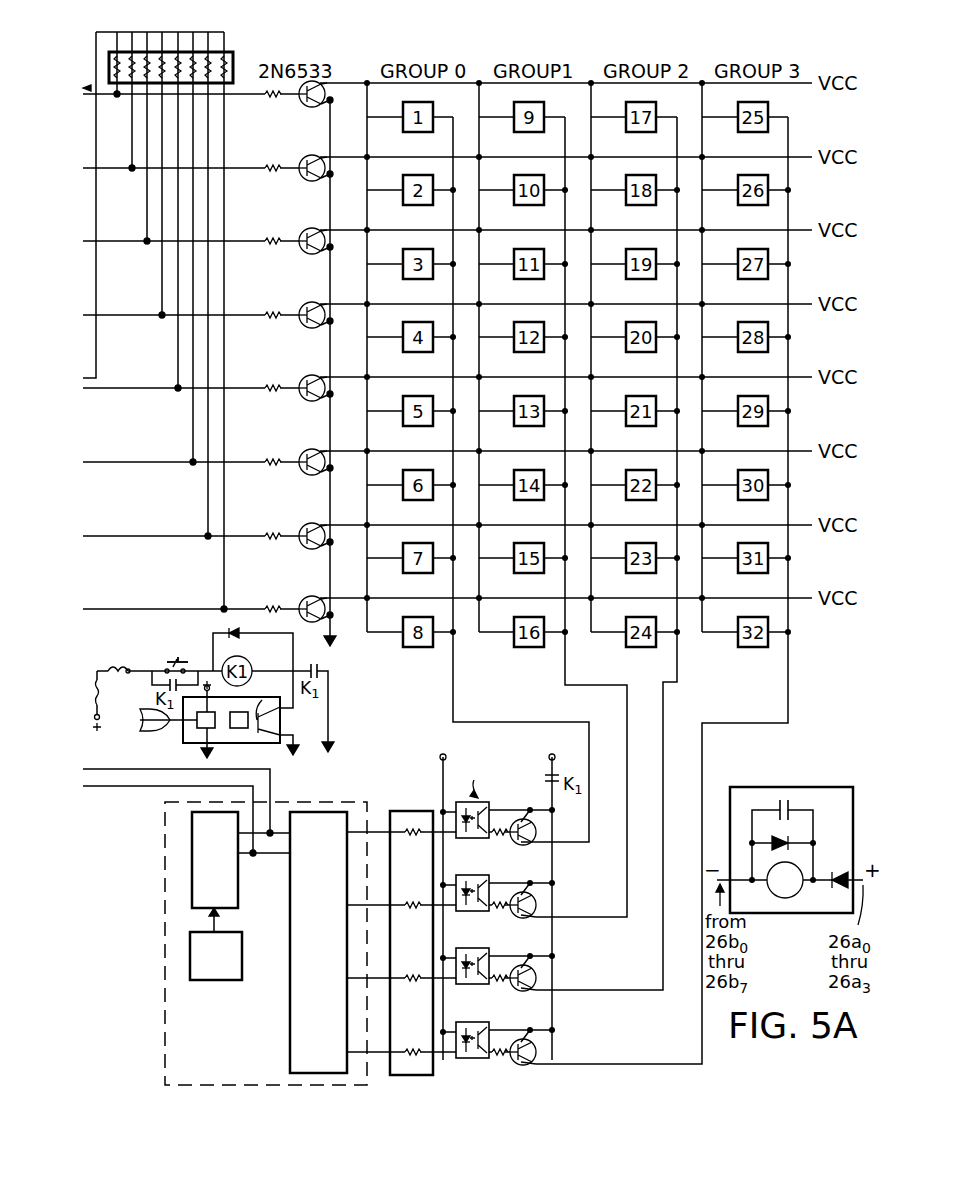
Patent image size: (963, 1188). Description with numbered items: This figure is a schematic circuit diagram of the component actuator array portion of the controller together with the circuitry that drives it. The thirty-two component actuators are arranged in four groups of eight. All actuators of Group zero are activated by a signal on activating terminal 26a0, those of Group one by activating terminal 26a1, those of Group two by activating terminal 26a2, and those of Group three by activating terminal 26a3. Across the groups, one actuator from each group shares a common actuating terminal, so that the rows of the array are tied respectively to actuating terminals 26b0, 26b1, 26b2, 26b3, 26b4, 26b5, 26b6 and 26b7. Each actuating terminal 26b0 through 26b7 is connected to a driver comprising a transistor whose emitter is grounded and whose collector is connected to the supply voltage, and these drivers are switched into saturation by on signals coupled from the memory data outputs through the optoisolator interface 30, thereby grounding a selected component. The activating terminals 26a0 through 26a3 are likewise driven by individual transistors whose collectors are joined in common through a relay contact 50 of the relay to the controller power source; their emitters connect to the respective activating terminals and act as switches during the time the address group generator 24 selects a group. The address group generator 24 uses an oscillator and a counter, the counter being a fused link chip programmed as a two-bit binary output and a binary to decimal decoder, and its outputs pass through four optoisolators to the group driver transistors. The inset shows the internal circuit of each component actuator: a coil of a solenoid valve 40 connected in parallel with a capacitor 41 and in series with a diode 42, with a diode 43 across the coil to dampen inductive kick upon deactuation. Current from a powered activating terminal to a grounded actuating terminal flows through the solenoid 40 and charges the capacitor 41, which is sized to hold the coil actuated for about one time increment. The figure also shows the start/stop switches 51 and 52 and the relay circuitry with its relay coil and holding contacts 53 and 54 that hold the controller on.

The address group generator 24 is at (252, 1088).
The optoisolator interface 30 is at (493, 1082).
The solenoid valve coil 40 is at (796, 888).
The capacitor 41 is at (792, 807).
The diode 42 is at (845, 871).
The diode 43 is at (790, 840).
The relay contact 50 is at (544, 772).
The start/stop switch 51 is at (191, 658).
The start/stop switch 52 is at (122, 662).
The holding contact 53 is at (152, 682).
The holding contact 54 is at (325, 667).
The activating terminal 26a0 is at (456, 691).
The activating terminal 26a1 is at (576, 684).
The activating terminal 26a2 is at (677, 680).
The activating terminal 26a3 is at (790, 669).
The actuating terminal 26b0 is at (237, 96).
The actuating terminal 26b1 is at (237, 170).
The actuating terminal 26b2 is at (237, 243).
The actuating terminal 26b3 is at (237, 317).
The actuating terminal 26b4 is at (237, 390).
The actuating terminal 26b5 is at (237, 464).
The actuating terminal 26b6 is at (232, 538).
The actuating terminal 26b7 is at (234, 607).